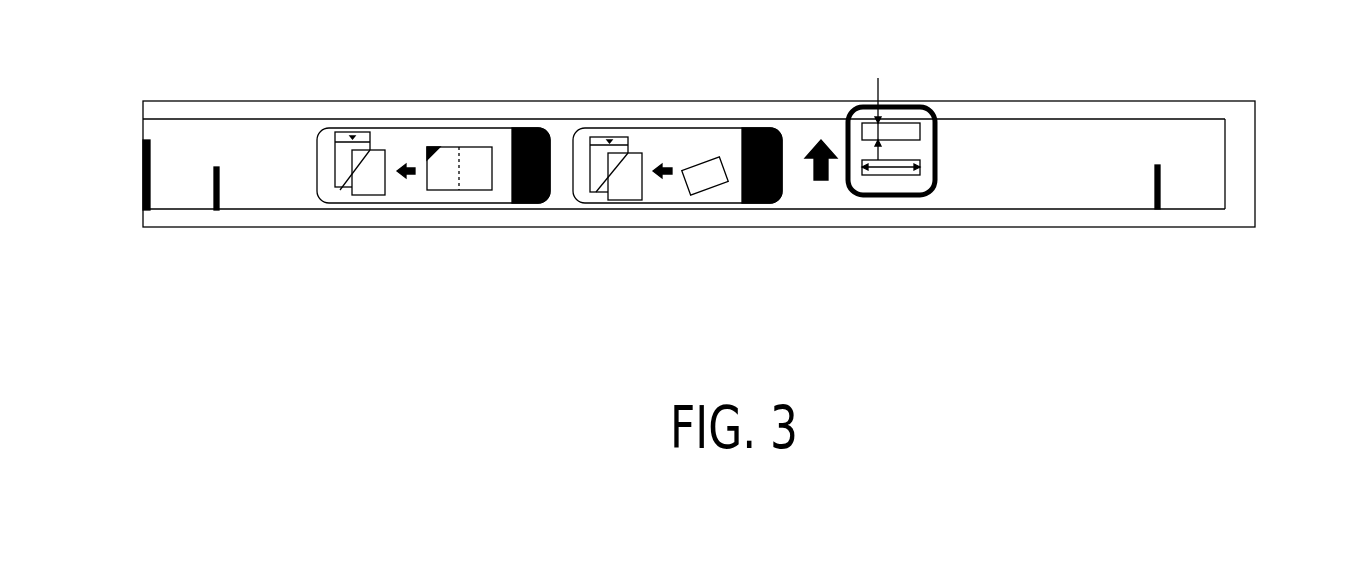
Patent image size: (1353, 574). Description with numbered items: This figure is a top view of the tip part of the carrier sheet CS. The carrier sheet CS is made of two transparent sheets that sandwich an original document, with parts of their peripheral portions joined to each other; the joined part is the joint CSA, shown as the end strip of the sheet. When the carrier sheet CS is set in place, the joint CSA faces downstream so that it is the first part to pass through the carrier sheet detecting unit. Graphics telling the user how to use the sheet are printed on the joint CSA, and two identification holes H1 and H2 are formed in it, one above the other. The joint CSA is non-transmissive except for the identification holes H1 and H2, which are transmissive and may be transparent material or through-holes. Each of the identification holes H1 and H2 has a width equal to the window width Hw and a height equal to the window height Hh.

The carrier sheet CS is at (1043, 238).
The joint CSA is at (1265, 101).
The identification hole H1 is at (905, 122).
The identification hole H2 is at (905, 175).
The window height Hh is at (872, 131).
The window width Hw is at (887, 168).